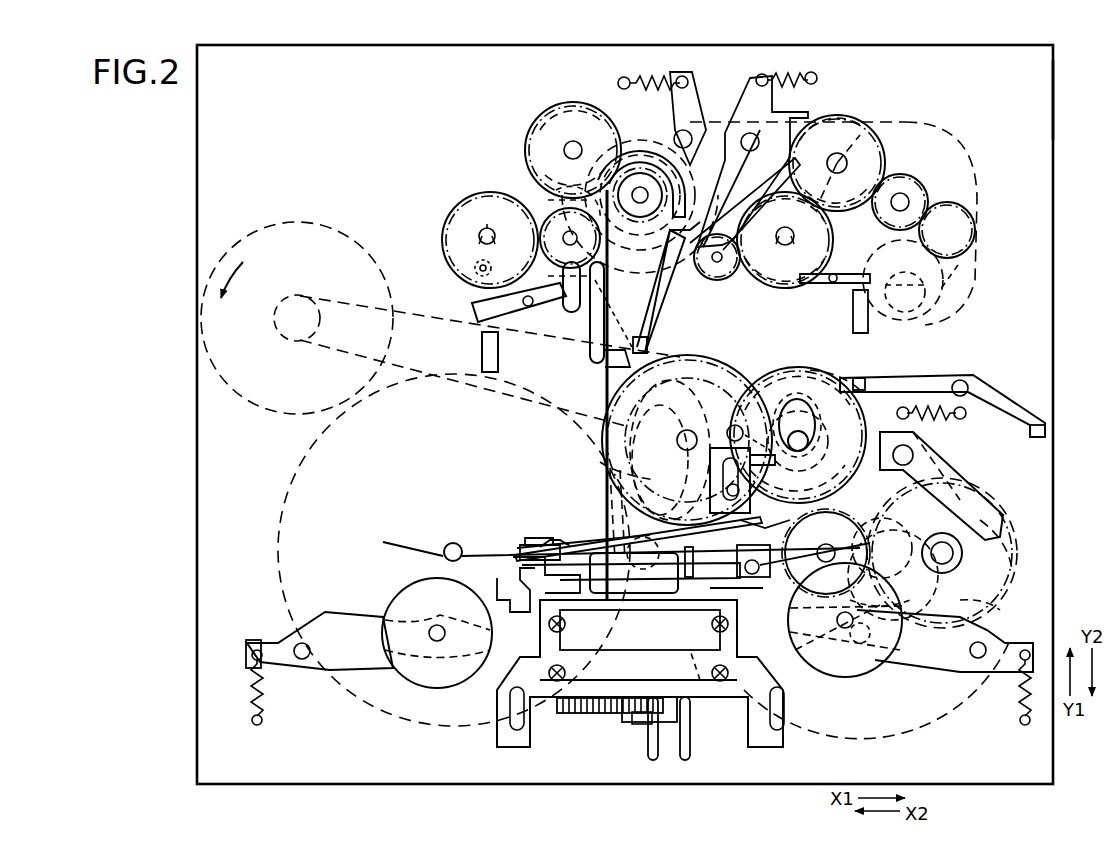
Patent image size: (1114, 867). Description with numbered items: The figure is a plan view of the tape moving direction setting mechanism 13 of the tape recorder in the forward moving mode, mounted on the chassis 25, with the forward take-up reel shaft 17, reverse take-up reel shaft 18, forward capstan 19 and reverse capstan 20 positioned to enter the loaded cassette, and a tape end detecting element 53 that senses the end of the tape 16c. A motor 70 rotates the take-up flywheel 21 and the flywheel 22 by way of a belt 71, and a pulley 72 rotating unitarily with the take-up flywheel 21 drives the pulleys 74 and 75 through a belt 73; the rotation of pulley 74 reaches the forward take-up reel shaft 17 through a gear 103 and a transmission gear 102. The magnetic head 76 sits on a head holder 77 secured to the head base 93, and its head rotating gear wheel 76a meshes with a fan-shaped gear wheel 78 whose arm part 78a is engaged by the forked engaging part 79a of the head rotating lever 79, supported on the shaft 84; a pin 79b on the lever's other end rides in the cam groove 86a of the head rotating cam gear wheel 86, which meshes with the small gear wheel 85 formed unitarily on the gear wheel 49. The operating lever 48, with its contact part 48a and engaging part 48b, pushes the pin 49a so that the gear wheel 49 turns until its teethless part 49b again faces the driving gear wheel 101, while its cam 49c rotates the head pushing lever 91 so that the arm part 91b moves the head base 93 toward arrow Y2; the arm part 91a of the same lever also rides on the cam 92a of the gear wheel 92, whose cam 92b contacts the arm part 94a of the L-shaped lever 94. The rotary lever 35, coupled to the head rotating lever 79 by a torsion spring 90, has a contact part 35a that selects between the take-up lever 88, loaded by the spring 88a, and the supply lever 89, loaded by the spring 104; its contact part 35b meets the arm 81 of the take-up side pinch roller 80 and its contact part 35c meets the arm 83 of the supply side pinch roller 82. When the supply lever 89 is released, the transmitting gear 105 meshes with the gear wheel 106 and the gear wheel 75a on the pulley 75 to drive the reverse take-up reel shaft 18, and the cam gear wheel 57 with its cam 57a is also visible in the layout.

The tape moving direction setting mechanism 13 is at (1000, 34).
The tape 16c is at (395, 541).
The forward take-up reel shaft 17 is at (785, 248).
The reverse take-up reel shaft 18 is at (482, 232).
The forward capstan 19 is at (845, 615).
The reverse capstan 20 is at (452, 543).
The take-up flywheel 21 is at (888, 722).
The flywheel 22 is at (280, 522).
The chassis 25 is at (1053, 95).
The rotary lever 35 is at (603, 380).
The contact part 35a is at (605, 322).
The contact part 35b is at (810, 553).
The contact part 35c is at (500, 578).
The operating lever 48 is at (995, 380).
The contact part 48a is at (1037, 438).
The engaging part 48b is at (864, 375).
The gear wheel 49 is at (796, 364).
The pin 49a is at (830, 412).
The teethless part 49b is at (770, 504).
The cam 49c is at (786, 418).
The tape end detecting element 53 is at (477, 266).
The cam gear wheel 57 is at (945, 285).
The cam 57a is at (940, 308).
The motor 70 is at (297, 222).
The belt 71 is at (443, 316).
The pulley 72 is at (893, 523).
The belt 73 is at (972, 275).
The pulley 74 is at (962, 150).
The pulley 75 is at (735, 158).
The gear wheel 75a is at (640, 187).
The magnetic head 76 is at (597, 550).
The head rotating gear wheel 76a is at (610, 722).
The head holder 77 is at (703, 678).
The fan-shaped gear wheel 78 is at (582, 722).
The arm part 78a is at (694, 730).
The head rotating lever 79 is at (602, 488).
The forked engaging part 79a is at (660, 756).
The pin 79b is at (612, 442).
The pinch roller 80 is at (826, 677).
The arm 81 is at (910, 674).
The pinch roller 82 is at (440, 684).
The arm 83 is at (352, 614).
The shaft 84 is at (620, 514).
The small gear wheel 85 is at (834, 362).
The head rotating cam gear wheel 86 is at (700, 357).
The cam groove 86a is at (612, 410).
The take-up lever 88 is at (667, 300).
The spring 88a is at (766, 76).
The supply lever 89 is at (580, 318).
The torsion spring 90 is at (515, 548).
The head pushing lever 91 is at (948, 455).
The arm part 91a is at (1000, 532).
The arm part 91b is at (728, 424).
The gear wheel 92 is at (985, 582).
The cam 92a is at (962, 556).
The cam 92b is at (992, 612).
The head base 93 is at (783, 730).
The L-shaped lever 94 is at (896, 640).
The arm part 94a is at (930, 584).
The driving gear wheel 101 is at (838, 450).
The transmission gear 102 is at (848, 118).
The gear 103 is at (908, 176).
The spring 104 is at (640, 78).
The transmitting gear 105 is at (545, 114).
The gear wheel 106 is at (540, 195).